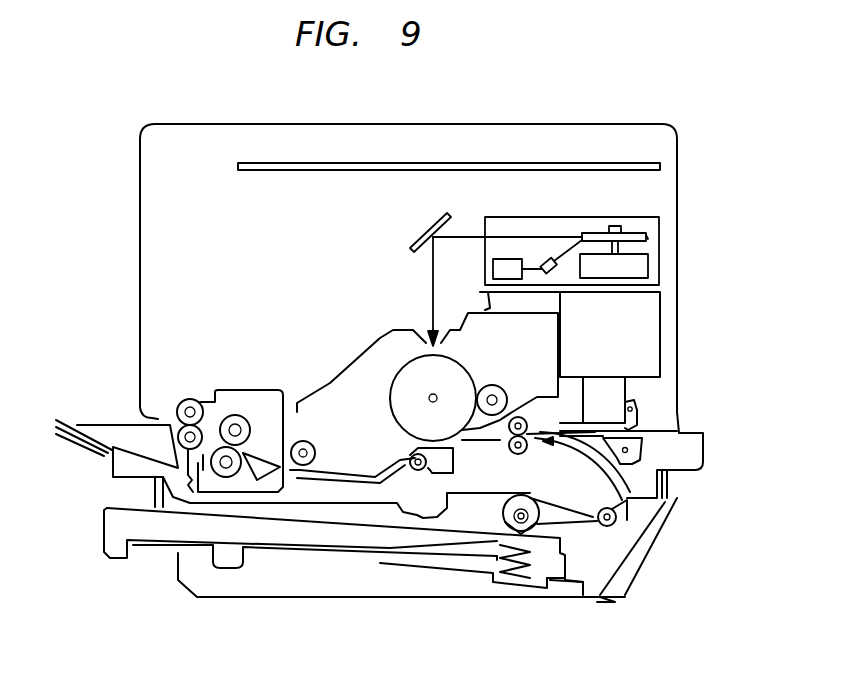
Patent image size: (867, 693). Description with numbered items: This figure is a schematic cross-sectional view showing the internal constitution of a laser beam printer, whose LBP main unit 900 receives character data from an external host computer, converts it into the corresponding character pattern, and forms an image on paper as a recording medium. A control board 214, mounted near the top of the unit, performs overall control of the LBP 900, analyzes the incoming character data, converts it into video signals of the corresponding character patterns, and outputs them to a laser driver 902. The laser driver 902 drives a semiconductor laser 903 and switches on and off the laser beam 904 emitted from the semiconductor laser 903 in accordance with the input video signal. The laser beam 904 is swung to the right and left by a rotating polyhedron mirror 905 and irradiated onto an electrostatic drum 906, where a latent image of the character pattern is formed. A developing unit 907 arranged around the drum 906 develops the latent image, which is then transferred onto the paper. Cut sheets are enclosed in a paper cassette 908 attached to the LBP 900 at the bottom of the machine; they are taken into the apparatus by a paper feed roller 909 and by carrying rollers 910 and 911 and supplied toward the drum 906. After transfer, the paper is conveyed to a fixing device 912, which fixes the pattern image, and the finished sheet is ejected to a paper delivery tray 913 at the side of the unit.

The LBP main unit 900 is at (601, 118).
The control board 214 is at (252, 162).
The laser driver 902 is at (493, 270).
The semiconductor laser 903 is at (549, 272).
The laser beam 904 is at (553, 236).
The rotating polyhedron mirror 905 is at (648, 237).
The electrostatic drum 906 is at (390, 398).
The developing unit 907 is at (323, 380).
The paper cassette 908 is at (105, 522).
The paper feed roller 909 is at (502, 514).
The carrying roller 910 is at (593, 503).
The carrying roller 911 is at (495, 452).
The fixing device 912 is at (240, 390).
The paper delivery tray 913 is at (63, 445).